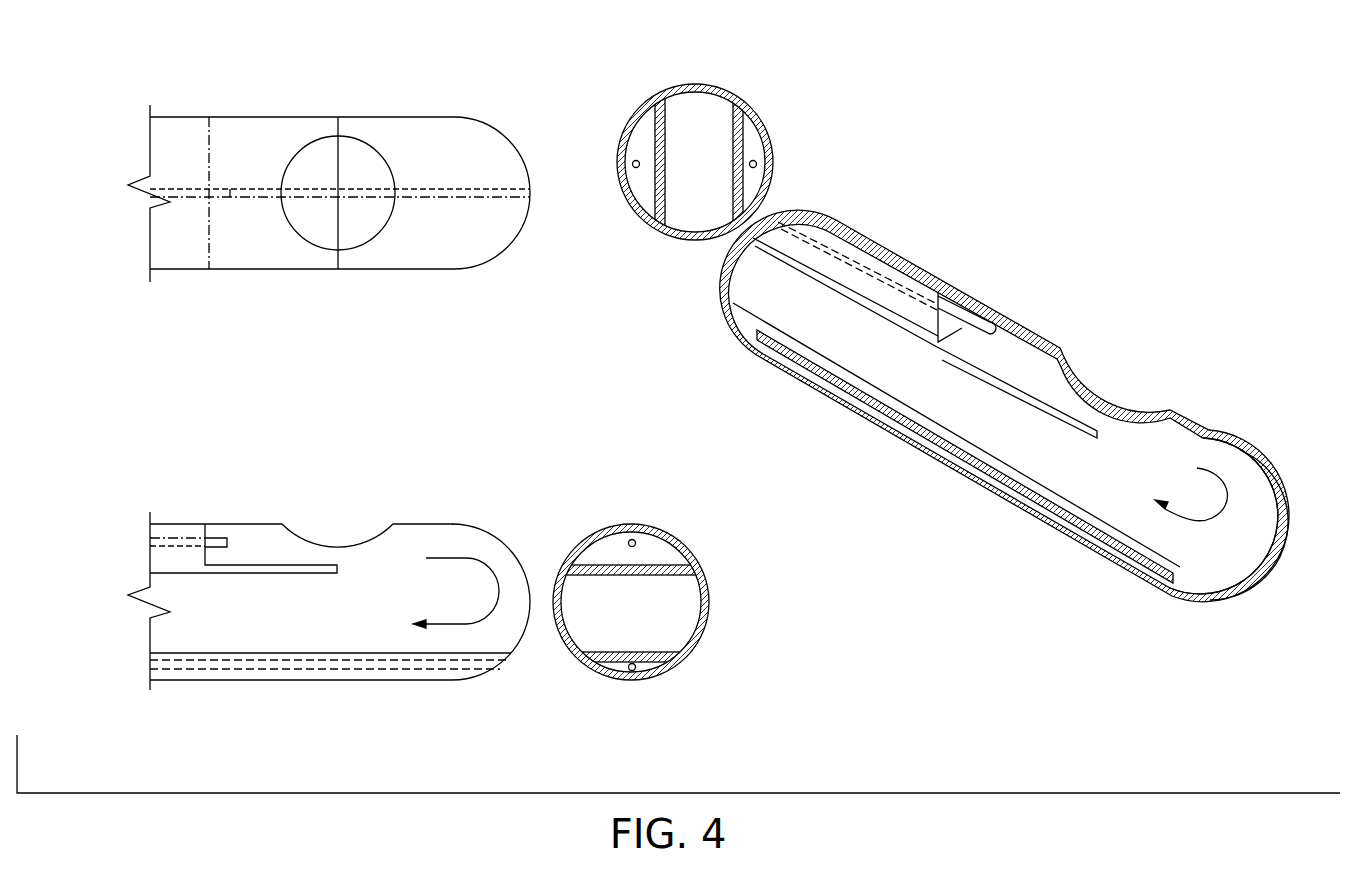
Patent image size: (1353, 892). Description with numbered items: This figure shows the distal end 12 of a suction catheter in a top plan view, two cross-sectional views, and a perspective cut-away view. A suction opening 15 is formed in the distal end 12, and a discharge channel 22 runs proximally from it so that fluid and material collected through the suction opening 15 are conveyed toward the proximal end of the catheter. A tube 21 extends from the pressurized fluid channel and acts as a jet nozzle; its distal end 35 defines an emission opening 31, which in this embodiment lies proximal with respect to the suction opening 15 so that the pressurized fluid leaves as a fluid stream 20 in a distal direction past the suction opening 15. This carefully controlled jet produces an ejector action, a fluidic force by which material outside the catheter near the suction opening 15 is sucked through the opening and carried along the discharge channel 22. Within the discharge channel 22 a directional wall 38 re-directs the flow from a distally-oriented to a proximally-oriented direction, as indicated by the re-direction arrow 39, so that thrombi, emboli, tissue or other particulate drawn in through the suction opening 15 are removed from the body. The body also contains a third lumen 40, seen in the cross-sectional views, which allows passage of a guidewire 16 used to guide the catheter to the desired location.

The distal end 12 is at (487, 110).
The suction opening 15 is at (350, 165).
The guidewire 16 is at (502, 221).
The fluid stream 20 is at (238, 180).
The tube 21 is at (762, 152).
The discharge channel 22 is at (283, 630).
The emission opening 31 is at (1022, 328).
The distal end of tube 35 is at (230, 540).
The directional wall 38 is at (497, 558).
The re-direction arrow 39 is at (478, 614).
The third lumen 40 is at (1110, 556).